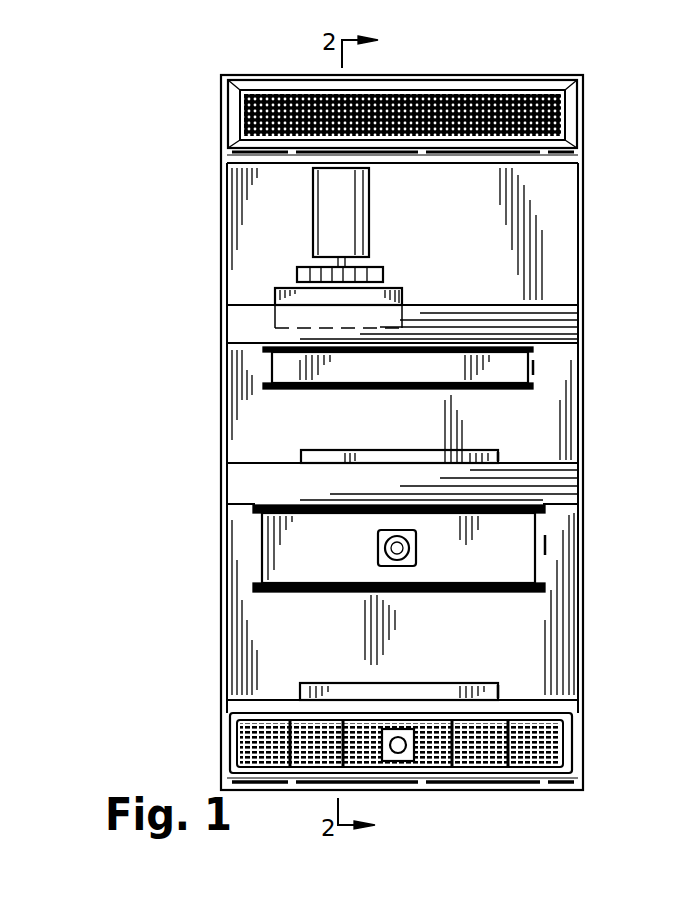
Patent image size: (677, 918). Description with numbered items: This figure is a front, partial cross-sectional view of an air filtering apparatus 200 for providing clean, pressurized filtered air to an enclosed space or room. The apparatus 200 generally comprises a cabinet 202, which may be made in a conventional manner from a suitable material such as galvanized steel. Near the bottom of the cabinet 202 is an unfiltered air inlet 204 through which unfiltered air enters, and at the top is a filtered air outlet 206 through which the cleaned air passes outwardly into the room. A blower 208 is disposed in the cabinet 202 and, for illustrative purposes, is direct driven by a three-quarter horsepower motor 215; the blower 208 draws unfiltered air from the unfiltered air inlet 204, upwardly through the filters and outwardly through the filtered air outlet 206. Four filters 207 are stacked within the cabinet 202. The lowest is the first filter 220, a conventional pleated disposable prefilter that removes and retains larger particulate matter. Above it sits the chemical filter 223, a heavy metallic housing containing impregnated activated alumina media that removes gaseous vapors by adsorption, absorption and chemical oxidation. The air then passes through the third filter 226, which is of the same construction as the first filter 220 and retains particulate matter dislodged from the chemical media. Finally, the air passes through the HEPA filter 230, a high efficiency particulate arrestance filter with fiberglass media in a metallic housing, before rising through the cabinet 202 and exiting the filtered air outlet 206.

The air filtering apparatus 200 is at (598, 74).
The cabinet 202 is at (583, 232).
The unfiltered air inlet 204 is at (558, 748).
The filtered air outlet 206 is at (560, 112).
The filter 207 is at (540, 365).
The blower 208 is at (297, 272).
The motor 215 is at (313, 218).
The first filter 220 is at (300, 694).
The chemical filter 223 is at (262, 562).
The filter 226 is at (300, 460).
The HEPA filter 230 is at (268, 375).